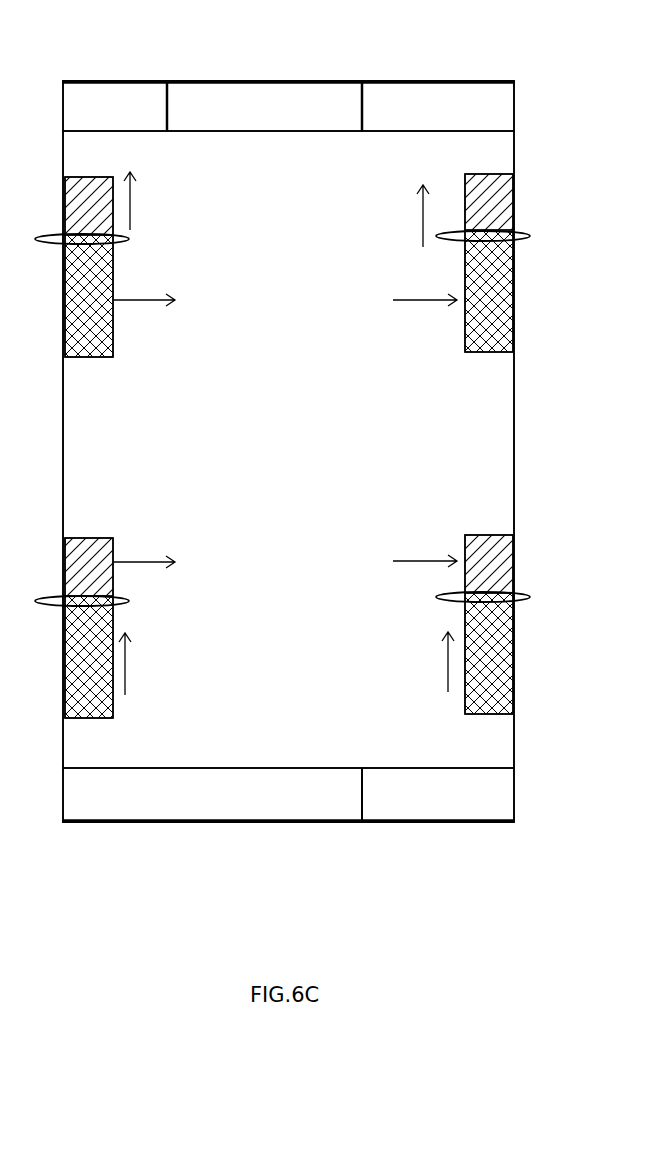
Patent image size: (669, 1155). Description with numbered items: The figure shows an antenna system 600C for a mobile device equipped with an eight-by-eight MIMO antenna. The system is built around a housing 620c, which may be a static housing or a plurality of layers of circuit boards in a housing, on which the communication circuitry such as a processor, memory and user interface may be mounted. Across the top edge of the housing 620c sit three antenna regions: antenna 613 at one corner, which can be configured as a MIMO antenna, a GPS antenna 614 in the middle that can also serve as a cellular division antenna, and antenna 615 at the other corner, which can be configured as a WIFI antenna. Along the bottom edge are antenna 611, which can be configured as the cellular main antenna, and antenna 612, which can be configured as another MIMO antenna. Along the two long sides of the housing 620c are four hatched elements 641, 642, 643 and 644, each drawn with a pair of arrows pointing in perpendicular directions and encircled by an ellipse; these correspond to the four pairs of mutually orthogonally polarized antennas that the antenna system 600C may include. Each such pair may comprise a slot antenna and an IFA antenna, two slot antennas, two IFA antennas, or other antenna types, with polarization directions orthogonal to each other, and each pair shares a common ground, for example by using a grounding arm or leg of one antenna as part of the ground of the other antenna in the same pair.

The antenna system 600C is at (108, 57).
The antenna 611 is at (95, 817).
The antenna 612 is at (413, 800).
The antenna 613 is at (83, 105).
The GPS antenna 614 is at (240, 103).
The antenna 615 is at (417, 113).
The housing 620c is at (490, 455).
The side element 641 is at (129, 240).
The side element 642 is at (529, 238).
The side element 643 is at (129, 600).
The side element 644 is at (529, 598).